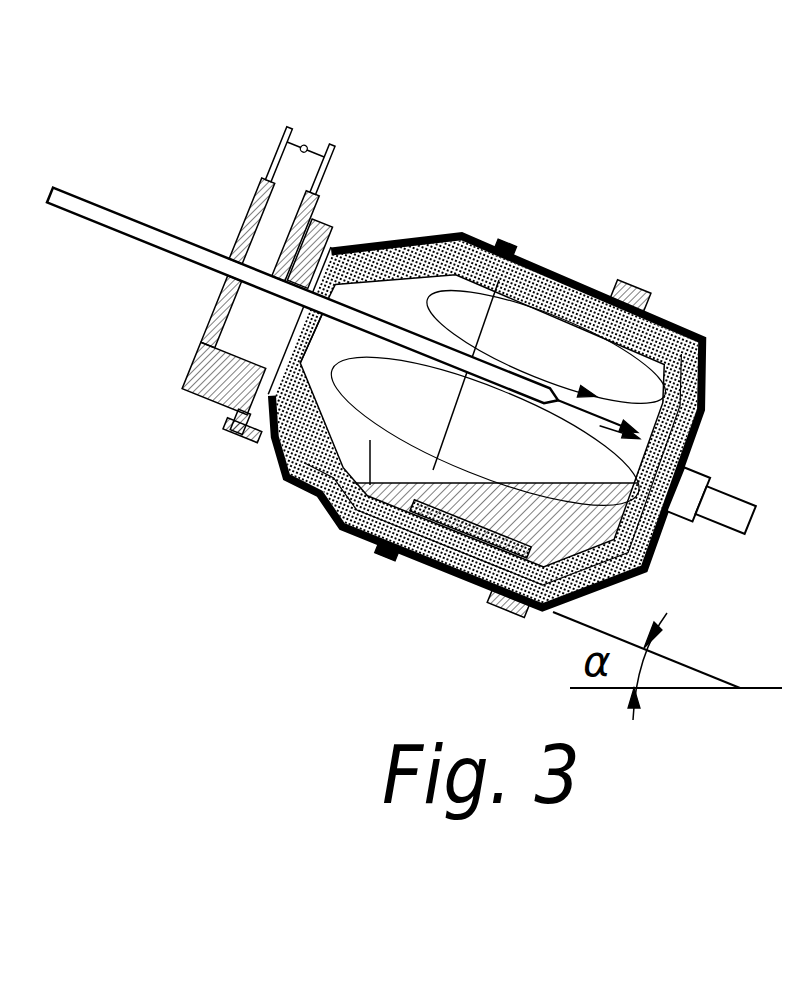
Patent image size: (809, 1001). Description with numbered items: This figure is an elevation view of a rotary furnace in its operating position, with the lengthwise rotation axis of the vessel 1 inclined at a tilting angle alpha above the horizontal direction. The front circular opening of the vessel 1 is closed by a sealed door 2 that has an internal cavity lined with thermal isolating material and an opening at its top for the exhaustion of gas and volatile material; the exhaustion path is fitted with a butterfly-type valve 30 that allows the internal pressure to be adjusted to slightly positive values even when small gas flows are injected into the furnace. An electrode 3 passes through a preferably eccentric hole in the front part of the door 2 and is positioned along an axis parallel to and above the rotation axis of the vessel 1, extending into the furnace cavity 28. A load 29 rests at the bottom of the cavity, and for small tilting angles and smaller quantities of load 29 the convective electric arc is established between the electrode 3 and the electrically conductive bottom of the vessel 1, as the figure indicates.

The vessel 1 is at (408, 240).
The door 2 is at (190, 364).
The electrode 3 is at (73, 202).
The furnace cavity 28 is at (358, 535).
The load 29 is at (443, 567).
The valve 30 is at (312, 150).